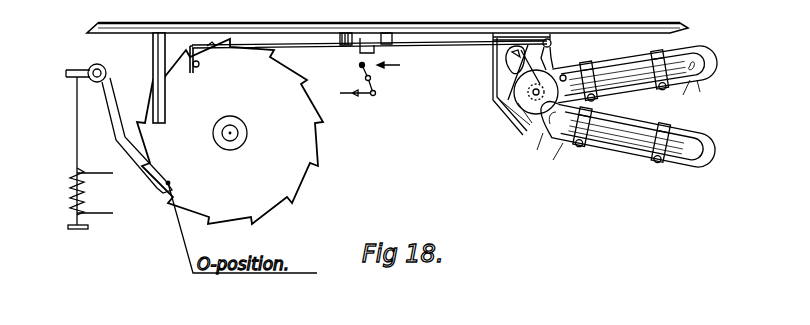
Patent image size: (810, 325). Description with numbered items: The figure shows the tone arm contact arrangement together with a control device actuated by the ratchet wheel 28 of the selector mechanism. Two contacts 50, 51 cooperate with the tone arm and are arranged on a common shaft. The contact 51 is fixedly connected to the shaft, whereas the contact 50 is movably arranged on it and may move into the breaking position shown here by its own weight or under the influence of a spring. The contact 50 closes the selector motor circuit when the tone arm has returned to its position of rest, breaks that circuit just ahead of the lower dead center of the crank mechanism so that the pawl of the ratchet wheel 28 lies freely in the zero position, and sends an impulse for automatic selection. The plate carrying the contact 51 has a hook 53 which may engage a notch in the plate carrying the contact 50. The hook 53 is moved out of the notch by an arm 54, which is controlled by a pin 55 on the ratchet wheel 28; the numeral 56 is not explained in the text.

The ratchet wheel 28 is at (308, 157).
The contact 50 is at (637, 135).
The contact 51 is at (640, 68).
The hook 53 is at (500, 100).
The arm 54 is at (555, 68).
The pin 55 is at (199, 65).
The post 56 is at (153, 57).